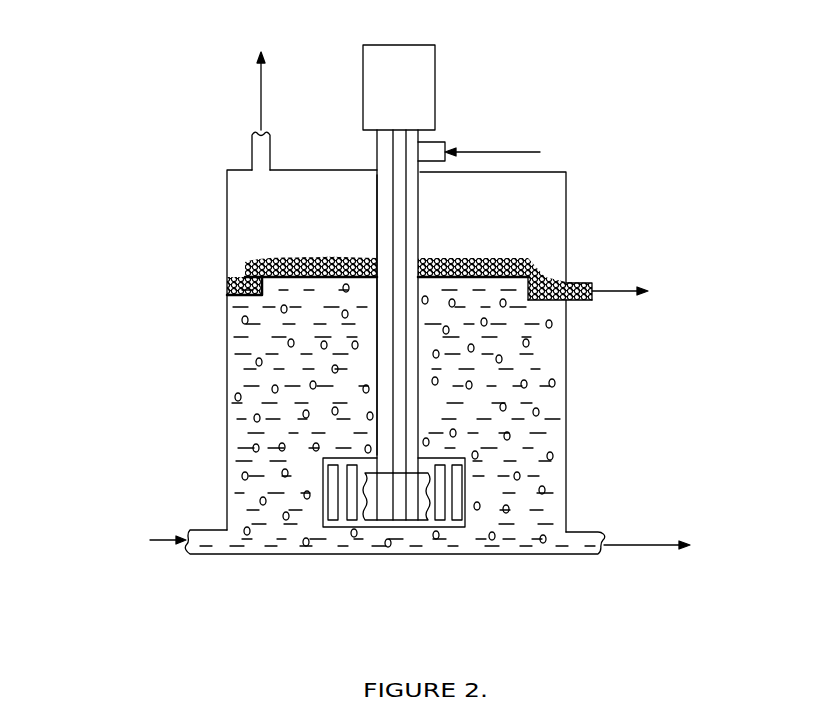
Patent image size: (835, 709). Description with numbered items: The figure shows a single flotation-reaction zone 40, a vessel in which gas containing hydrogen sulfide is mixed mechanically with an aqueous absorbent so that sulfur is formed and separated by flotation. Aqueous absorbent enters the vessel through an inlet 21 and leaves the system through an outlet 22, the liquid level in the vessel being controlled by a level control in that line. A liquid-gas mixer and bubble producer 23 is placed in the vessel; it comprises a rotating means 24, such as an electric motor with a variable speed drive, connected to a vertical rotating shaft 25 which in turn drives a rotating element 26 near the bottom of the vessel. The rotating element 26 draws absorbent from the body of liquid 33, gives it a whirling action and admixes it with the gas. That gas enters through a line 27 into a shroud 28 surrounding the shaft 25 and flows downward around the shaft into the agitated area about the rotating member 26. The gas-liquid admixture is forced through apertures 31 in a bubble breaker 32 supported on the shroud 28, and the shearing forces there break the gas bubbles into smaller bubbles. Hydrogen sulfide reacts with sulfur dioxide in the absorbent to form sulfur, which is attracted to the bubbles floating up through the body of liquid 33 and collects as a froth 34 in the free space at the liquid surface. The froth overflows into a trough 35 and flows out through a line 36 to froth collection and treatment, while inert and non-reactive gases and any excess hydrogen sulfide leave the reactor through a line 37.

The inlet 21 is at (197, 555).
The outlet 22 is at (592, 557).
The liquid-gas mixer and bubble producer 23 is at (419, 235).
The rotating means 24 is at (435, 72).
The vertical rotating shaft 25 is at (392, 155).
The rotating element 26 is at (382, 522).
The line 27 is at (445, 142).
The shroud 28 is at (377, 212).
The apertures 31 is at (330, 502).
The bubble breaker 32 is at (468, 462).
The body of liquid 33 is at (548, 383).
The froth 34 is at (493, 262).
The trough 35 is at (545, 300).
The line 36 is at (592, 283).
The line 37 is at (252, 150).
The flotation-reaction zone 40 is at (566, 238).